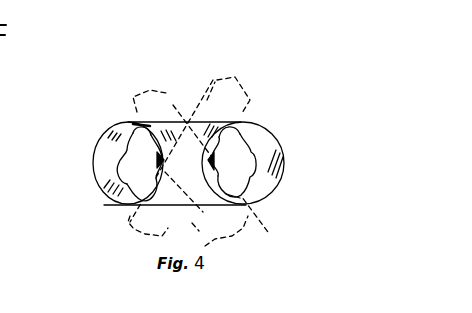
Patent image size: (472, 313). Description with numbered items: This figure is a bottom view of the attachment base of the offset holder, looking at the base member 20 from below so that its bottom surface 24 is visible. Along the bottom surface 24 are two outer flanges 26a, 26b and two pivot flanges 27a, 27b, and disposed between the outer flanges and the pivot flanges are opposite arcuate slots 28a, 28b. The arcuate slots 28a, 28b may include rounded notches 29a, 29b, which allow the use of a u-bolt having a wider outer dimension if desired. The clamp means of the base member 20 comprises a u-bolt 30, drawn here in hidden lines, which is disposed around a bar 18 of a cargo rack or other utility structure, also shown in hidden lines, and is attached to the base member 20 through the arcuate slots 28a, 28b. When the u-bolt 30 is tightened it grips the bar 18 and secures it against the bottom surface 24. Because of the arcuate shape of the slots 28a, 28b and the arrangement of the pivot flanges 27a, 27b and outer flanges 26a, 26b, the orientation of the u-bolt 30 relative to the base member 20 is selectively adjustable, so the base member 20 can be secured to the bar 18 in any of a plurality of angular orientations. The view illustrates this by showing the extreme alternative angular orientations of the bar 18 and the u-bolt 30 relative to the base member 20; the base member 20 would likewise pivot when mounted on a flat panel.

The bar 18 is at (164, 95).
The base member 20 is at (262, 120).
The bottom surface 24 is at (168, 188).
The outer flange 26a is at (100, 143).
The outer flange 26b is at (267, 193).
The pivot flange 27a is at (128, 189).
The pivot flange 27b is at (246, 148).
The arcuate slot 28a is at (152, 178).
The arcuate slot 28b is at (233, 148).
The rounded notch 29a is at (127, 160).
The rounded notch 29b is at (250, 165).
The u-bolt 30 is at (174, 155).